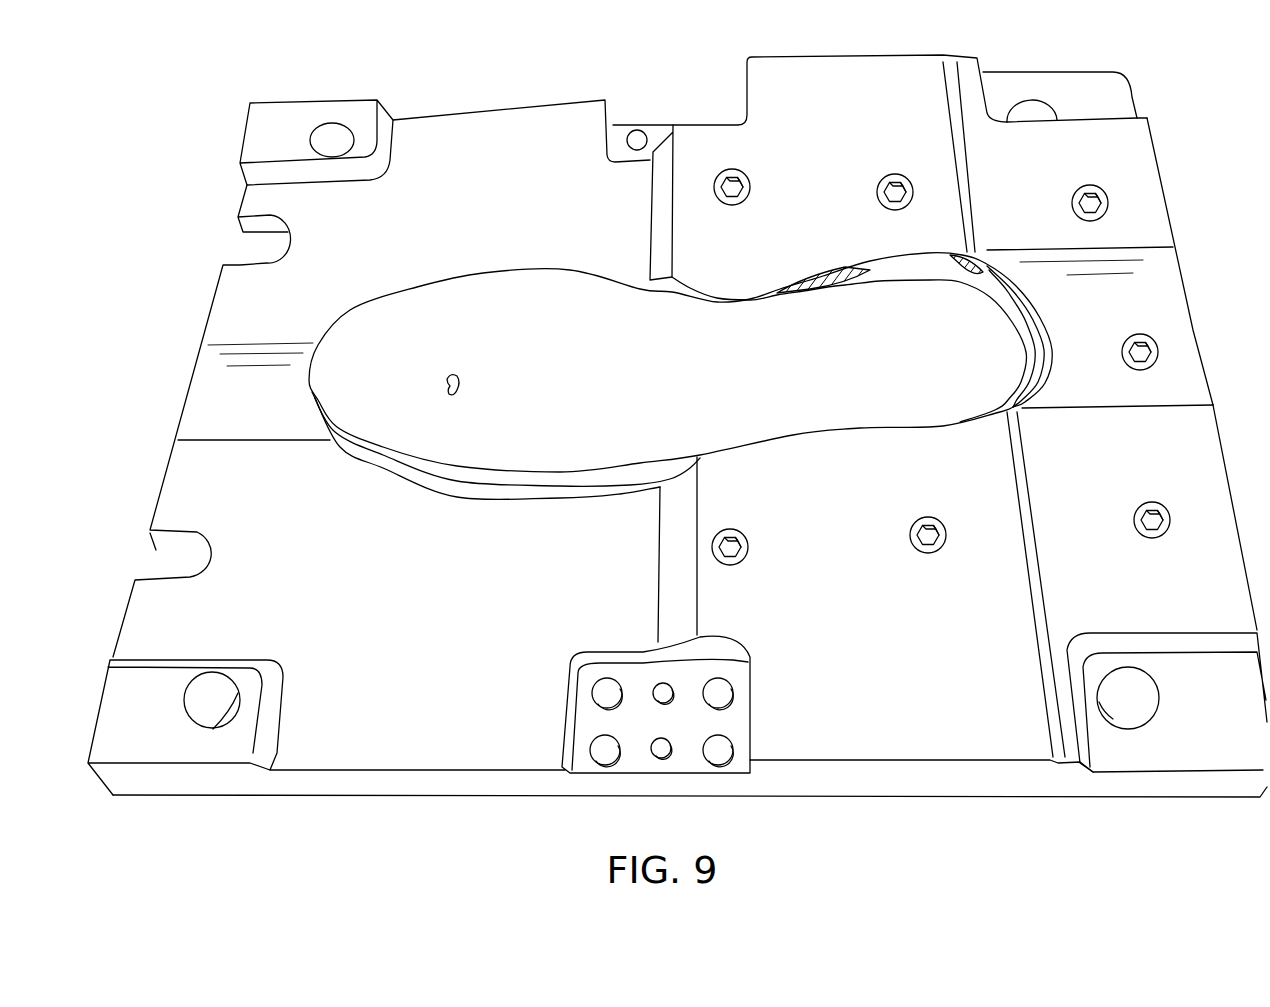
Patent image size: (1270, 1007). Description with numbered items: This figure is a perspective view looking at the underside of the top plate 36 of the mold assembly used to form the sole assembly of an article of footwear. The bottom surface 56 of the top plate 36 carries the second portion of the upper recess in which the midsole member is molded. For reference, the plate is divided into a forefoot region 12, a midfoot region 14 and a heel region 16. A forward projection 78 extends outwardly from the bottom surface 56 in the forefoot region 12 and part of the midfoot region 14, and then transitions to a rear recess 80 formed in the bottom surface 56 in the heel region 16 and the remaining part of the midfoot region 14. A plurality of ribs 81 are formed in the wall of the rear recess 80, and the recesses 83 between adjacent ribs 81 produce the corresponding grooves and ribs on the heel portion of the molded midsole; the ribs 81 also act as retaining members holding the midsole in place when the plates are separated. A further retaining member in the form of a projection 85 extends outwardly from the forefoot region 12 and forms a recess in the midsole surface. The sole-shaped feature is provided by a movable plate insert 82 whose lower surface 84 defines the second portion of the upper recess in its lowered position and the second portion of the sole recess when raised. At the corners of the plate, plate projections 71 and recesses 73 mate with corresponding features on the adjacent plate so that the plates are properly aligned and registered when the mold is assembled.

The forefoot region 12 is at (392, 377).
The midfoot region 14 is at (664, 375).
The heel region 16 is at (935, 365).
The top plate 36 is at (1048, 782).
The bottom surface 56 is at (915, 632).
The plate projections 71 is at (267, 144).
The recesses 73 is at (1075, 107).
The forward projection 78 is at (463, 307).
The rear recess 80 is at (930, 268).
The ribs 81 is at (837, 267).
The movable plate insert 82 is at (457, 468).
The recesses 83 is at (808, 287).
The lower surface 84 is at (520, 417).
The projection 85 is at (462, 385).